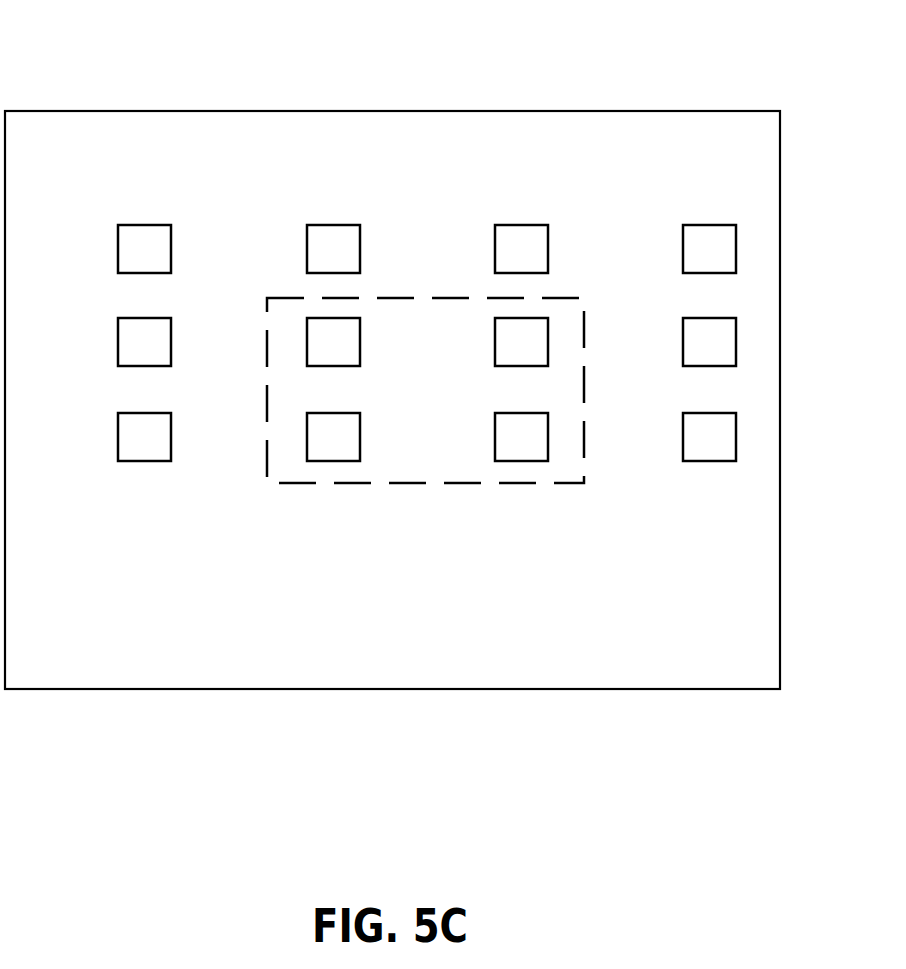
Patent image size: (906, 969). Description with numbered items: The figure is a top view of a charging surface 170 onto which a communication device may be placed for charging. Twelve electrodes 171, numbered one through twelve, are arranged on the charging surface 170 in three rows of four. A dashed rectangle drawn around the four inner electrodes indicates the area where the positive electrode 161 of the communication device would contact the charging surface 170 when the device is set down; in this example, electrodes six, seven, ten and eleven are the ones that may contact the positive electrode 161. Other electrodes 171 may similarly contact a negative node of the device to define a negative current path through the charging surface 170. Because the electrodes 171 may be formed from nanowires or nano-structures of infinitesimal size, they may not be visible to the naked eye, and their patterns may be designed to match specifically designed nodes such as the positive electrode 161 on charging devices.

The charging surface 170 is at (392, 351).
The electrodes 171 is at (381, 316).
The positive electrode 161 is at (425, 424).